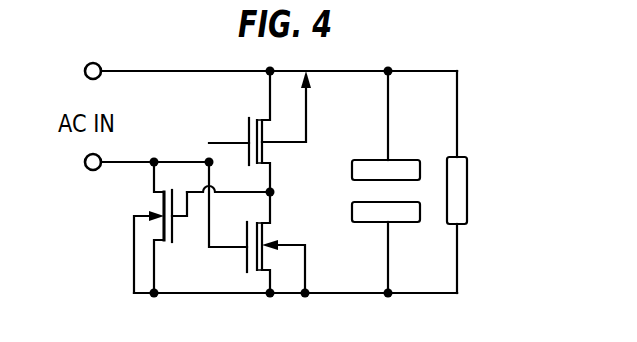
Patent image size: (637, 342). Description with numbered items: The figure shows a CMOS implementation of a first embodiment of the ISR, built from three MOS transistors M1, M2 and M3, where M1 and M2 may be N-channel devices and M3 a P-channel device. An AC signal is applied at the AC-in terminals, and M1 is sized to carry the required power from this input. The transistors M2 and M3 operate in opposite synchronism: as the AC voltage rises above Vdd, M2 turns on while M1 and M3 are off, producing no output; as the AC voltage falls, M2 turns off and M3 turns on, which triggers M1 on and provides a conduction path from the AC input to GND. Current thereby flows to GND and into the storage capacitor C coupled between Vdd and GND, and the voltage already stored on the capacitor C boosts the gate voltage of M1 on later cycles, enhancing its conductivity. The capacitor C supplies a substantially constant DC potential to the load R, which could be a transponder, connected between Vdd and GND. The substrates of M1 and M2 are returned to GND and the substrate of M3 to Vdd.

The MOS transistor M1 is at (145, 227).
The MOS transistor M2 is at (259, 242).
The MOS transistor M3 is at (269, 131).
The capacitor C is at (386, 182).
The load R is at (490, 182).
The supply voltage node Vdd is at (445, 72).
The ground point GND is at (450, 299).